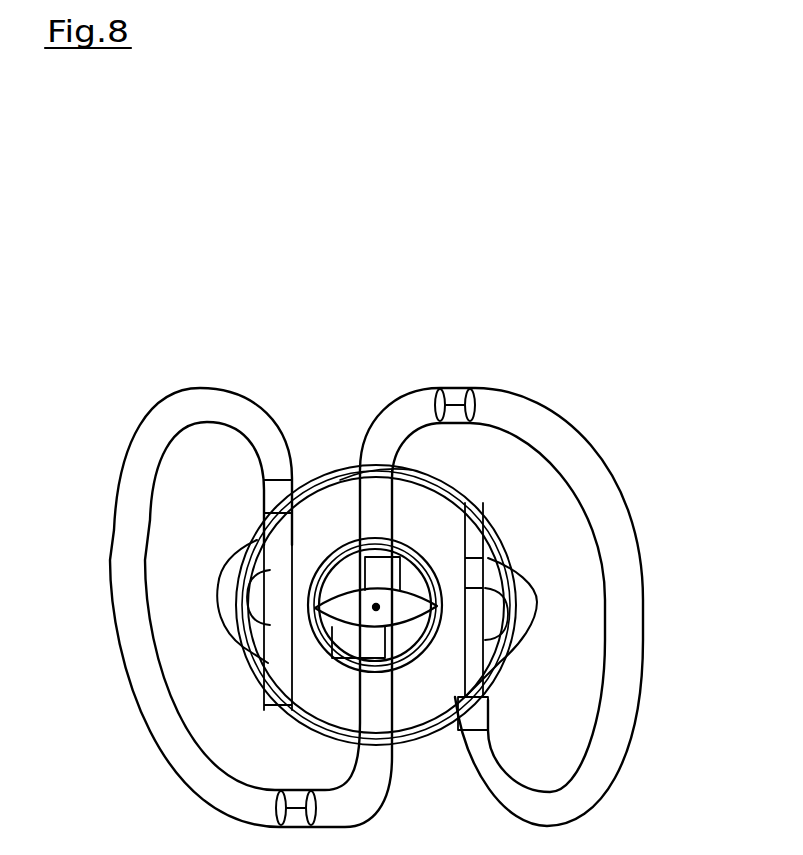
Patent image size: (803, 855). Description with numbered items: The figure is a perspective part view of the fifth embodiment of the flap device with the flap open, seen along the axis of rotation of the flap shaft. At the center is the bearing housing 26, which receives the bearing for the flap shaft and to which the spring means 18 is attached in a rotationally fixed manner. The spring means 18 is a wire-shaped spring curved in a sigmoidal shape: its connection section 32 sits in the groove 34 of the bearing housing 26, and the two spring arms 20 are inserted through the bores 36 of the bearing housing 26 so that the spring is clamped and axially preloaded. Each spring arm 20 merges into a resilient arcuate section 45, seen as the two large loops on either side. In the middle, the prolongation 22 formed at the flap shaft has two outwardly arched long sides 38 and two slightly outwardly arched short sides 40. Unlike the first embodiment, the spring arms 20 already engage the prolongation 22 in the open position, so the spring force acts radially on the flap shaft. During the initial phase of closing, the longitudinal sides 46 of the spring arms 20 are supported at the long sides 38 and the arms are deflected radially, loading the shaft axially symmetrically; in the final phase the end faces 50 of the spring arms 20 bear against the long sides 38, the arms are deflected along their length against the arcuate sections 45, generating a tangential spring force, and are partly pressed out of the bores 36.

The spring means 18 is at (571, 376).
The spring arm 20 is at (108, 624).
The prolongation 22 is at (405, 614).
The bearing housing 26 is at (350, 490).
The connection section 32 is at (383, 498).
The groove 34 is at (381, 495).
The bores 36 is at (262, 667).
The long sides 38 is at (350, 590).
The short sides 40 is at (330, 606).
The arcuate section 45 is at (222, 601).
The longitudinal sides 46 is at (410, 572).
The end faces 50 is at (365, 573).